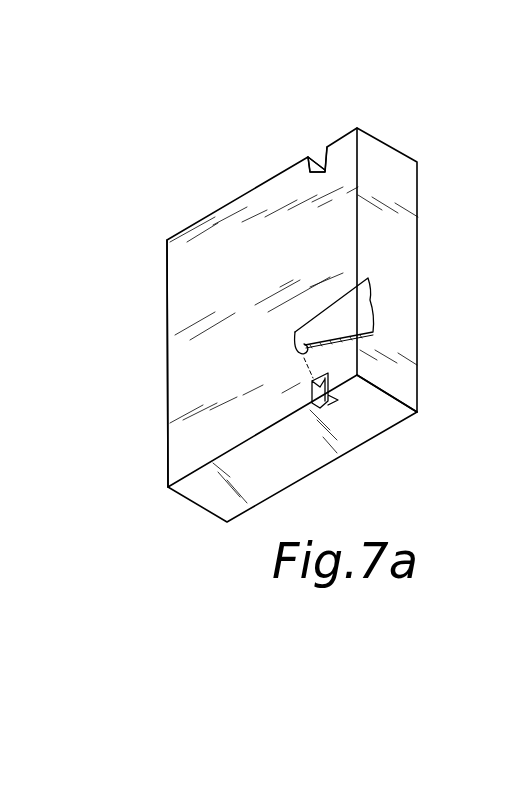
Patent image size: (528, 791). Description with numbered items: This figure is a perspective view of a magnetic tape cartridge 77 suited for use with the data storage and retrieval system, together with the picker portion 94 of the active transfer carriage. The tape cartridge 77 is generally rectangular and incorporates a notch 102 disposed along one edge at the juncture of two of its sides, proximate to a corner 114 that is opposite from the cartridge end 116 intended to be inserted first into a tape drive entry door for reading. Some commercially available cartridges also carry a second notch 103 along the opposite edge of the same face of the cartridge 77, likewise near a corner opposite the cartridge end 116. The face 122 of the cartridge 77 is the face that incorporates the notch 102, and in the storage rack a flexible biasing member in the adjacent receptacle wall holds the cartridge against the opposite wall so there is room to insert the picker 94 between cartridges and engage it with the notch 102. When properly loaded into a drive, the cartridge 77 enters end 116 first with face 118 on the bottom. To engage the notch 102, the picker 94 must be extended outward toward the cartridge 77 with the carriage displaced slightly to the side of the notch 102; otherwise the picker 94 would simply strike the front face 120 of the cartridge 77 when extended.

The tape cartridge 77 is at (255, 177).
The picker portion 94 is at (355, 302).
The notch 102 is at (328, 415).
The second notch 103 is at (320, 148).
The corner 114 is at (357, 375).
The cartridge end 116 is at (168, 415).
The face 118 is at (205, 493).
The front face 120 is at (392, 182).
The face 122 is at (218, 240).